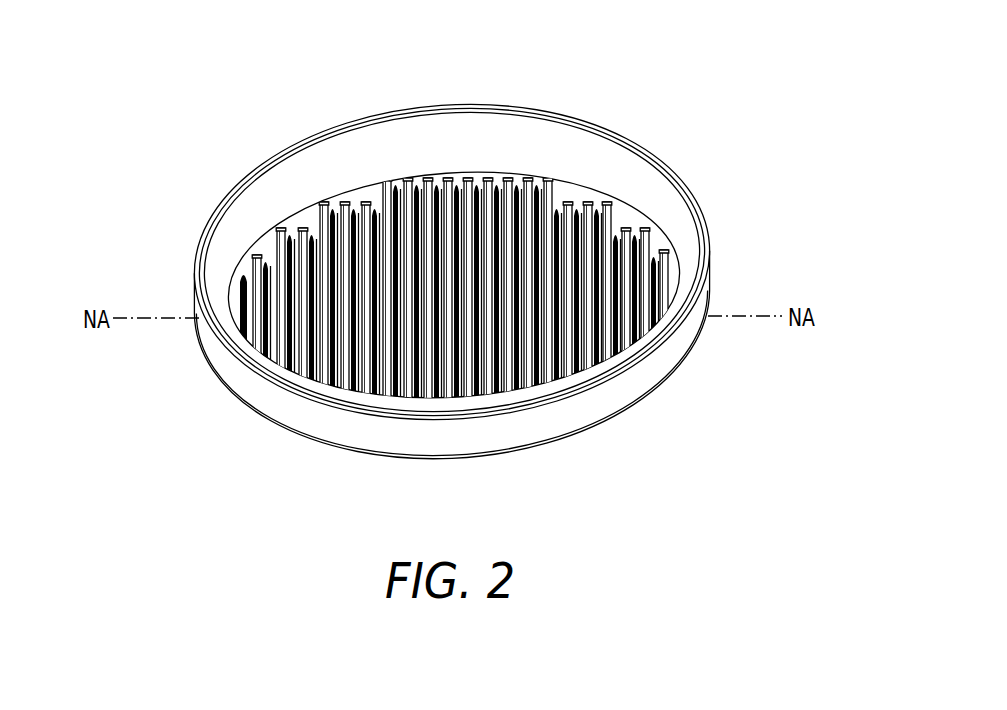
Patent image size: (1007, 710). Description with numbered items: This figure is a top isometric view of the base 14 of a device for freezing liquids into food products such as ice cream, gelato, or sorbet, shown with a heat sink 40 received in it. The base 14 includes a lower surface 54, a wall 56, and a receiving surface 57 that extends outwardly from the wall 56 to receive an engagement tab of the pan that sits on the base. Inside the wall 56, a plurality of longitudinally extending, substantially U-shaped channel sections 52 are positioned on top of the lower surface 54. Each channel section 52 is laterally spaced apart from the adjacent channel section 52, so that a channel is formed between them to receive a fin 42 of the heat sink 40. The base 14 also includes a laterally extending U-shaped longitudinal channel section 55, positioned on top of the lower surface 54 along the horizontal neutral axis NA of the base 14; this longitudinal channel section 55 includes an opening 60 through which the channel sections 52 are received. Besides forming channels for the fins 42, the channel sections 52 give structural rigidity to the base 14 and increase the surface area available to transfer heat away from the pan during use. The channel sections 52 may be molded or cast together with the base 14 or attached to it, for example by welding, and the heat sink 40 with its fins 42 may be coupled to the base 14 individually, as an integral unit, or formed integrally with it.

The base 14 is at (163, 88).
The heat sink 40 is at (643, 197).
The fin 42 is at (668, 272).
The channel section 52 is at (313, 223).
The lower surface 54 is at (582, 205).
The longitudinal channel section 55 is at (233, 330).
The wall 56 is at (255, 210).
The receiving surface 57 is at (197, 281).
The opening 60 is at (340, 330).